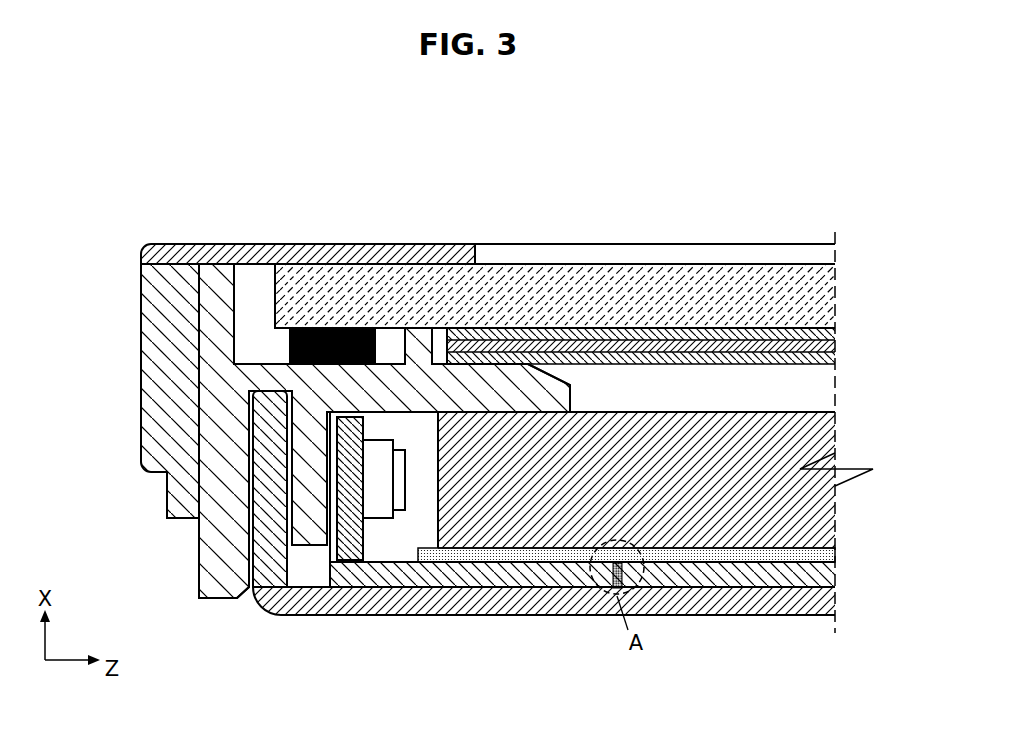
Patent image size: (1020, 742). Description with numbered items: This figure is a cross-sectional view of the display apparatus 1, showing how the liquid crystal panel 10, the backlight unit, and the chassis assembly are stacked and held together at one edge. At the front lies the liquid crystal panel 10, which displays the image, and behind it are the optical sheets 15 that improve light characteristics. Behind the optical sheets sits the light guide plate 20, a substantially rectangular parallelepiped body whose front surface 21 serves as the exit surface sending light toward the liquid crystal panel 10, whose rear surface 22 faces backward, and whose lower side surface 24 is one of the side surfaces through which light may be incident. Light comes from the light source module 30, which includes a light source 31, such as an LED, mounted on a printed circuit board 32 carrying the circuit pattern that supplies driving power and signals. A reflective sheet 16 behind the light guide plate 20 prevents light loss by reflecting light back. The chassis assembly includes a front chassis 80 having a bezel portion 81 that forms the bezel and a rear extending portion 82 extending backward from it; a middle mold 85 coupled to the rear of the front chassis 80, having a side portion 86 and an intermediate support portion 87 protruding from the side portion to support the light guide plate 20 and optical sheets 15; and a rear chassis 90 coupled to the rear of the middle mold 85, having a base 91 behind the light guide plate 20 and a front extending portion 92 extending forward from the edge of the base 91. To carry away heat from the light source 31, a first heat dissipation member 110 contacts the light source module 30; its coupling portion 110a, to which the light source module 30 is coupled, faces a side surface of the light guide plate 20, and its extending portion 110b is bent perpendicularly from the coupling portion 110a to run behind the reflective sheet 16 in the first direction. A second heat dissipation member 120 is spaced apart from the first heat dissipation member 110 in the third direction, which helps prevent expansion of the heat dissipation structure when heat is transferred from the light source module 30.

The display apparatus 1 is at (148, 135).
The liquid crystal panel 10 is at (577, 280).
The optical sheets 15 is at (836, 346).
The reflective sheet 16 is at (835, 555).
The light guide plate 20 is at (664, 543).
The front surface 21 is at (762, 413).
The rear surface 22 is at (790, 535).
The lower side surface 24 is at (440, 470).
The light source module 30 is at (414, 337).
The light source 31 is at (398, 449).
The printed circuit board 32 is at (385, 445).
The front chassis 80 is at (268, 348).
The bezel portion 81 is at (337, 243).
The rear extending portion 82 is at (152, 338).
The middle mold 85 is at (321, 399).
The side portion 86 is at (220, 449).
The intermediate support portion 87 is at (495, 380).
The rear chassis 90 is at (475, 548).
The base 91 is at (683, 613).
The front extending portion 92 is at (265, 535).
The first heat dissipation member 110 is at (363, 564).
The coupling portion 110a is at (348, 548).
The extending portion 110b is at (384, 617).
The second heat dissipation member 120 is at (733, 583).